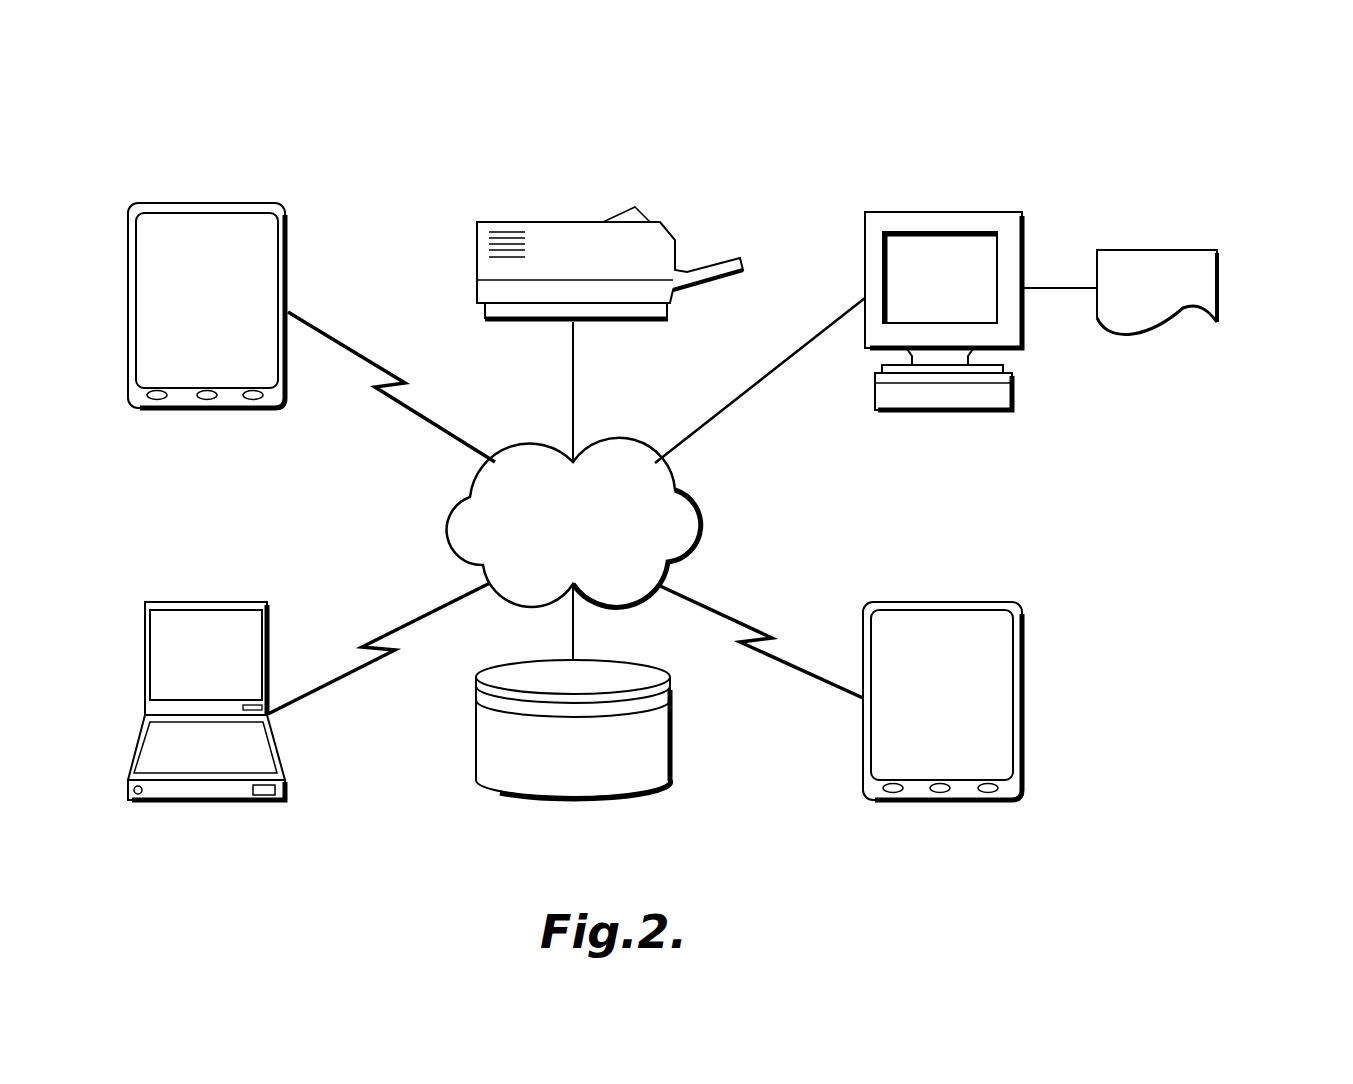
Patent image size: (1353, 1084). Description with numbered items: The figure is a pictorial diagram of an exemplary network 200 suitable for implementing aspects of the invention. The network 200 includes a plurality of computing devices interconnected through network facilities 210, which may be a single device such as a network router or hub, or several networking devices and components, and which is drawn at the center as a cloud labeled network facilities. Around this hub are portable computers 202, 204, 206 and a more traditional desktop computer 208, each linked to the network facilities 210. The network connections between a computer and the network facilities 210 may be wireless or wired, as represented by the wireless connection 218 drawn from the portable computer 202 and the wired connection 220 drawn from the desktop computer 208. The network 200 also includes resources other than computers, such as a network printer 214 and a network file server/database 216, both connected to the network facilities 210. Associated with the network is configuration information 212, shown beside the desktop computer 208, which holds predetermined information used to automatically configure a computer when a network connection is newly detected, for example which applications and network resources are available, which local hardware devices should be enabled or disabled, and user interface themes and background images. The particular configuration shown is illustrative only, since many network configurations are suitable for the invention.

The exemplary network 200 is at (749, 153).
The portable computer 202 is at (290, 243).
The portable computer 204 is at (270, 638).
The portable computer 206 is at (1023, 633).
The desktop computer 208 is at (1025, 225).
The network facilities 210 is at (708, 497).
The configuration information 212 is at (1218, 258).
The network printer 214 is at (665, 225).
The network file server/database 216 is at (670, 748).
The wireless connection 218 is at (347, 343).
The wired connection 220 is at (727, 405).